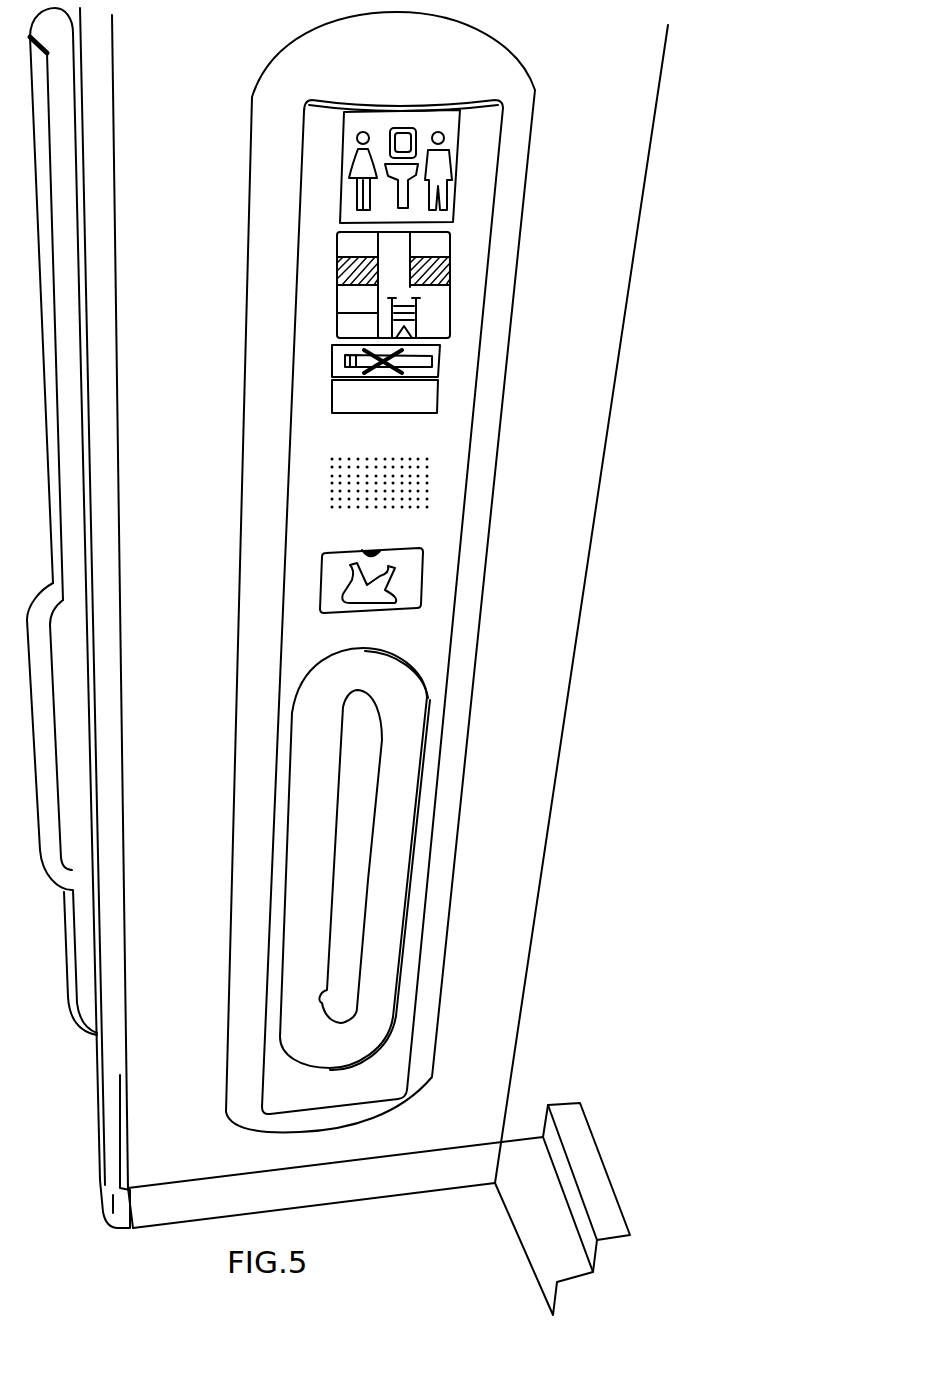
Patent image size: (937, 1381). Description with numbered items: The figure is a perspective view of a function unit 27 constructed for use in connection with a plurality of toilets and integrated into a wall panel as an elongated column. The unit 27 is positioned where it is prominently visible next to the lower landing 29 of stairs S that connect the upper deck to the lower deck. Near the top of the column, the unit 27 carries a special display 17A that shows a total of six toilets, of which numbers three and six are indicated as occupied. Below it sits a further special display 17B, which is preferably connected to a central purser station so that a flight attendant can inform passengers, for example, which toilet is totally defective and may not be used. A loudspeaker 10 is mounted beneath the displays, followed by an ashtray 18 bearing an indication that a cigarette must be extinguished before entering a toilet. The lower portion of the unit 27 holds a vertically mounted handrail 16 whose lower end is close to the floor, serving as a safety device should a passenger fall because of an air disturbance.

The loudspeaker 10 is at (405, 473).
The handrail 16 is at (387, 927).
The special display 17A is at (450, 338).
The special display 17B is at (386, 402).
The ashtray 18 is at (408, 565).
The function unit 27 is at (452, 765).
The lower landing 29 is at (422, 1255).
The stairs S is at (583, 1147).